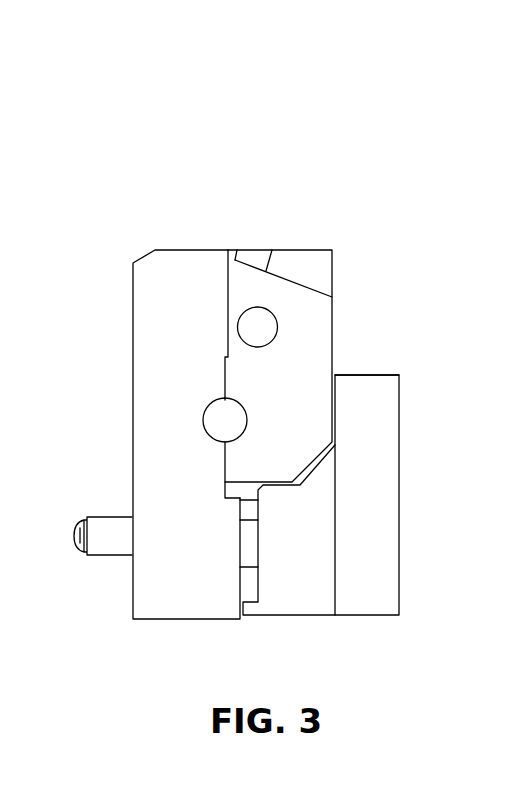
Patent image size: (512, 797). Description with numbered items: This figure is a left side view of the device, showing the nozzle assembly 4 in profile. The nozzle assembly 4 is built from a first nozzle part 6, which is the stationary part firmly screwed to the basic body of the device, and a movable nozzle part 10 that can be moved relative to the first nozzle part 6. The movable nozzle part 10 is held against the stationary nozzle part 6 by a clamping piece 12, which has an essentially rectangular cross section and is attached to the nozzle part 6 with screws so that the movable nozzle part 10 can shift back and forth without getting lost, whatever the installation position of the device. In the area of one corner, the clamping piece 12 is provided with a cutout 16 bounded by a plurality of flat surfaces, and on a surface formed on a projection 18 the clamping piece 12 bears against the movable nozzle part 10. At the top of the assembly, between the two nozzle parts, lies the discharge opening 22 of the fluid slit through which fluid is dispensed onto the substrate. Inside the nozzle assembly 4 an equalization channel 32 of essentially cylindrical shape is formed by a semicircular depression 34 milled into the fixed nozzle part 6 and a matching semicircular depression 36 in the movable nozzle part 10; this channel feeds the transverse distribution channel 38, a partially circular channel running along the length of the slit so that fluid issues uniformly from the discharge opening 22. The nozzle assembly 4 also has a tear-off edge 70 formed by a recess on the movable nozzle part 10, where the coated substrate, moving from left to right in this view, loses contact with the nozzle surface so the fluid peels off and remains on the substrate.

The nozzle assembly 4 is at (207, 117).
The first nozzle part 6 is at (152, 608).
The movable nozzle part 10 is at (325, 328).
The clamping piece 12 is at (393, 573).
The cutout 16 is at (323, 466).
The projection 18 is at (337, 385).
The discharge opening 22 is at (227, 245).
The equalization channel 32 is at (225, 425).
The depression 34 is at (210, 402).
The depression 36 is at (243, 403).
The transverse distribution channel 38 is at (228, 328).
The tear-off edge 70 is at (237, 245).